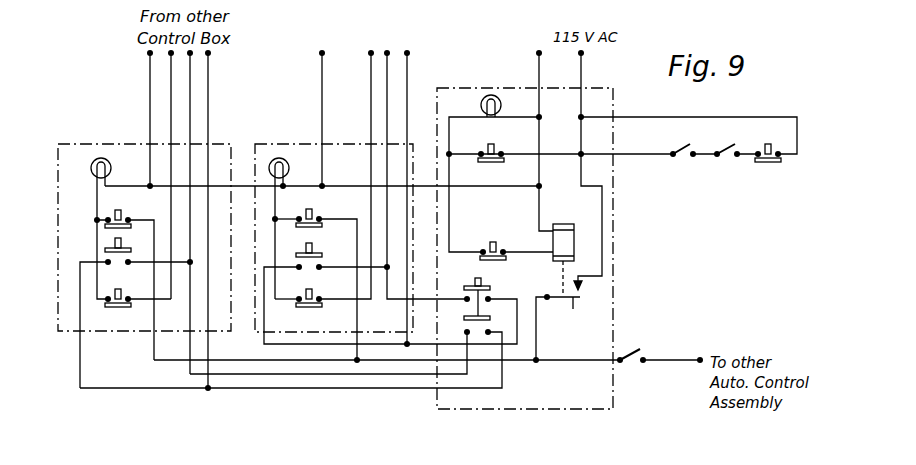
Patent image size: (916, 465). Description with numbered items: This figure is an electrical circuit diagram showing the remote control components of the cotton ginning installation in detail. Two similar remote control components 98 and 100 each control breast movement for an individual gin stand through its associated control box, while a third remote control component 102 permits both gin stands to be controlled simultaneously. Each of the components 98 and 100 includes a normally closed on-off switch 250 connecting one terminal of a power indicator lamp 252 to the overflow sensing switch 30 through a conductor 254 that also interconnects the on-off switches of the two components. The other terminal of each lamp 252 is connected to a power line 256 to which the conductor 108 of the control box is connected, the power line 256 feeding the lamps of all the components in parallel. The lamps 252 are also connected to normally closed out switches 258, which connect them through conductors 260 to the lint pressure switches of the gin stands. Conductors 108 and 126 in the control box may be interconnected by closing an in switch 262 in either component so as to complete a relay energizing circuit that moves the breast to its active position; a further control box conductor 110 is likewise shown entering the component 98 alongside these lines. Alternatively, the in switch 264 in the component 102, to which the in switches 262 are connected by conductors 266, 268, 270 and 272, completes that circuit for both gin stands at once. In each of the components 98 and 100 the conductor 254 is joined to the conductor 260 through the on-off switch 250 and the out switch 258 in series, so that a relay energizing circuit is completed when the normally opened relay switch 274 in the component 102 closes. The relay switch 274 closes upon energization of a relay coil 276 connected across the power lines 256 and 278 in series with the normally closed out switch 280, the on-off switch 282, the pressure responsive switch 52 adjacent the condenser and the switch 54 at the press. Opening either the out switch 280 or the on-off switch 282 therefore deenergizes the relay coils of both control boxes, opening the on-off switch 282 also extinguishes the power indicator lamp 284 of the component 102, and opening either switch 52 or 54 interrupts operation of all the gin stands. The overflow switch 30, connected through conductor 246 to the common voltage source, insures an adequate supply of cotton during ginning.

The remote control component 100 is at (58, 298).
The remote control component 98 is at (268, 143).
The remote control component 102 is at (578, 410).
The conductor 108 is at (320, 75).
The conductor 260 is at (370, 74).
The conductor 110 is at (387, 74).
The conductor 126 is at (407, 74).
The power indicator lamp 252 is at (290, 168).
The on-off switch 250 is at (314, 215).
The in switch 262 is at (320, 256).
The out switch 258 is at (298, 310).
The conductor 254 is at (365, 363).
The conductor 270 is at (392, 377).
The conductor 272 is at (427, 391).
The power line 256 is at (539, 78).
The power line 278 is at (583, 72).
The power indicator lamp 284 is at (480, 100).
The on-off switch 282 is at (505, 140).
The out switch 280 is at (495, 248).
The relay coil 276 is at (562, 238).
The relay switch 274 is at (557, 328).
The in switch 264 is at (487, 288).
The conductor 266 is at (432, 297).
The conductor 268 is at (437, 334).
The overflow sensing switch 30 is at (638, 346).
The conductor 246 is at (686, 355).
The pressure responsive switch 52 is at (683, 157).
The remote control device 54 is at (767, 167).